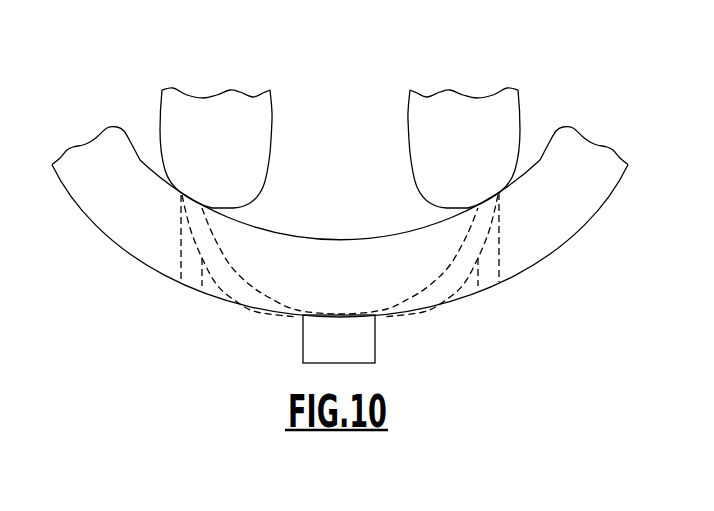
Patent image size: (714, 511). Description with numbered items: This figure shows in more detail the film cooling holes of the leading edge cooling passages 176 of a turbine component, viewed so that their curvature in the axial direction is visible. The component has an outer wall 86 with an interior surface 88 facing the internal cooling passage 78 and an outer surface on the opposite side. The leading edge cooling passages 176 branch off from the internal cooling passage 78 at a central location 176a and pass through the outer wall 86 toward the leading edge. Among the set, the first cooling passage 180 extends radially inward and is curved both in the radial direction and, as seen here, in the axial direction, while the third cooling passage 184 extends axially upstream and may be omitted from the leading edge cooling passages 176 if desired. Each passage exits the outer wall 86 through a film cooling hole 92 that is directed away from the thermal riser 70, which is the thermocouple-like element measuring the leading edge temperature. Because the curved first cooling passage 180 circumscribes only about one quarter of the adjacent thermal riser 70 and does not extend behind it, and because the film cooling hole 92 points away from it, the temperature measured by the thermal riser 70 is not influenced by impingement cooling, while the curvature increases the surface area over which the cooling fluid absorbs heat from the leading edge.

The thermal riser 70 is at (303, 352).
The internal cooling passage 78 is at (252, 123).
The outer wall 86 is at (595, 187).
The interior surface 88 is at (202, 97).
The film cooling hole 92 is at (547, 257).
The leading edge cooling passages 176 is at (248, 235).
The central location 176a is at (181, 242).
The first cooling passage 180 is at (400, 300).
The third cooling passage 184 is at (217, 293).